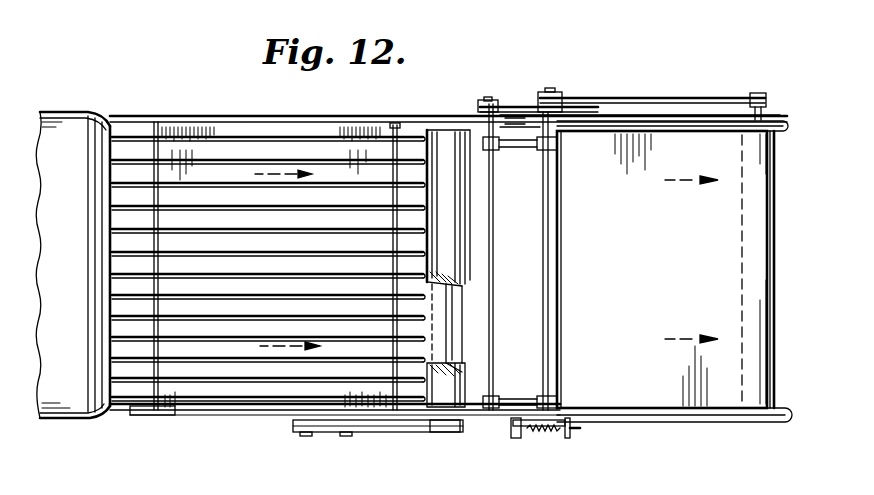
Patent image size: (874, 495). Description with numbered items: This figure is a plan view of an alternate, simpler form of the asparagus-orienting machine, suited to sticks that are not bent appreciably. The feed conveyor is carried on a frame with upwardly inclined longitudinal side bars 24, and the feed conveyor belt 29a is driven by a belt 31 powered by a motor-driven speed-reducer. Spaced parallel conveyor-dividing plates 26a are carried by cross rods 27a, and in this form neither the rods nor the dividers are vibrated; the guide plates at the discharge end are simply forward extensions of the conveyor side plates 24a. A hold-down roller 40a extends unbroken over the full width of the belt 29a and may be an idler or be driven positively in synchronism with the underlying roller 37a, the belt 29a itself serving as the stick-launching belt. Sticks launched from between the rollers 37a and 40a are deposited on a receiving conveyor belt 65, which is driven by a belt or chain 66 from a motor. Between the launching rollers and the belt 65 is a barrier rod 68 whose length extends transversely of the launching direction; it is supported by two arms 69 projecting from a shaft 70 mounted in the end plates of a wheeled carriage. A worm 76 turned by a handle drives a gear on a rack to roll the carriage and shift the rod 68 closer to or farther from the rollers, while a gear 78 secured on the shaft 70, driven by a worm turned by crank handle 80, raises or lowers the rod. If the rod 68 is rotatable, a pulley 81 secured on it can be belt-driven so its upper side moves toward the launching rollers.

The longitudinal side bars 24 is at (278, 412).
The conveyor side plates 24a is at (262, 106).
The conveyor-dividing plates 26a is at (246, 372).
The feed conveyor belt 29a is at (178, 383).
The cross rods 27a is at (396, 124).
The hold-down roller 40a is at (432, 130).
The underlying roller 37a is at (458, 336).
The drive belt 31 is at (378, 432).
The pulley 81 is at (506, 104).
The belt or chain 66 is at (648, 99).
The barrier rod 68 is at (492, 243).
The arms 69 is at (505, 150).
The shaft 70 is at (544, 264).
The conveyor belt 65 is at (662, 278).
The worm 76 is at (518, 438).
The gear 78 is at (548, 438).
The crank handle 80 is at (578, 432).